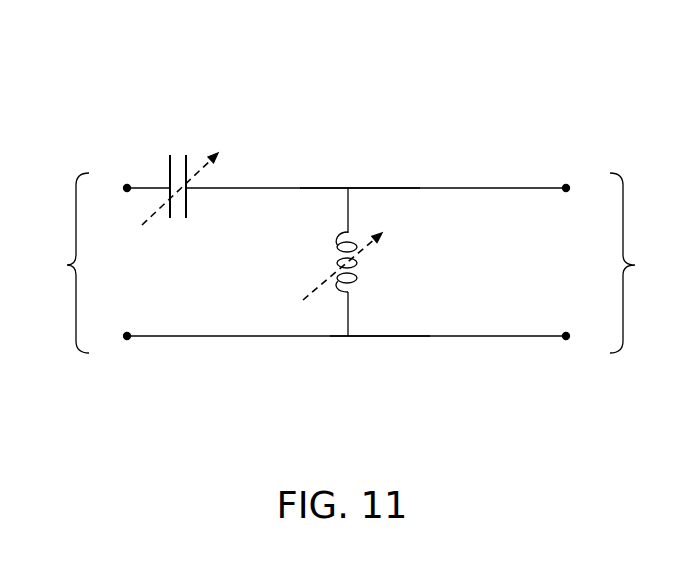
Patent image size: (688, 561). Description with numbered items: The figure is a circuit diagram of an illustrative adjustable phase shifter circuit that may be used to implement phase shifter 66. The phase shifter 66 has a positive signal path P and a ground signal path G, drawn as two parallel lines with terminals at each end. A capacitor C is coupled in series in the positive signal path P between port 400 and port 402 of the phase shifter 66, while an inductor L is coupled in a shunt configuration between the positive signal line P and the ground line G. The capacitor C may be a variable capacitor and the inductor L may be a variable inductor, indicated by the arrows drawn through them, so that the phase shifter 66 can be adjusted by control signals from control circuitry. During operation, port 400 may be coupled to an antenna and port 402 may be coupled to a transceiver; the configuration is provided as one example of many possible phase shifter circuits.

The phase shifter 66 is at (350, 215).
The port 400 is at (75, 263).
The port 402 is at (622, 263).
The capacitor C is at (180, 172).
The inductor L is at (342, 266).
The positive signal path P is at (403, 188).
The ground signal path G is at (390, 336).